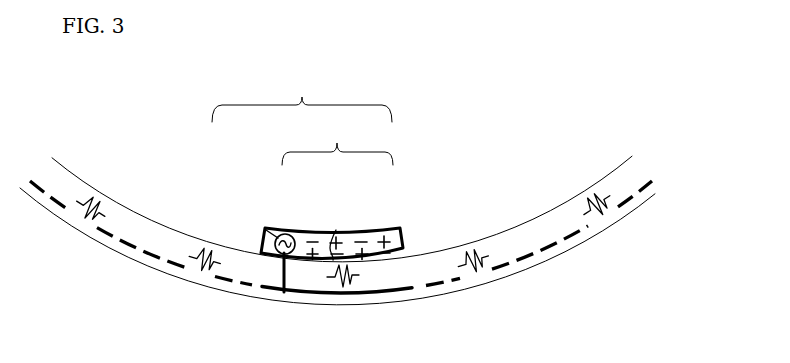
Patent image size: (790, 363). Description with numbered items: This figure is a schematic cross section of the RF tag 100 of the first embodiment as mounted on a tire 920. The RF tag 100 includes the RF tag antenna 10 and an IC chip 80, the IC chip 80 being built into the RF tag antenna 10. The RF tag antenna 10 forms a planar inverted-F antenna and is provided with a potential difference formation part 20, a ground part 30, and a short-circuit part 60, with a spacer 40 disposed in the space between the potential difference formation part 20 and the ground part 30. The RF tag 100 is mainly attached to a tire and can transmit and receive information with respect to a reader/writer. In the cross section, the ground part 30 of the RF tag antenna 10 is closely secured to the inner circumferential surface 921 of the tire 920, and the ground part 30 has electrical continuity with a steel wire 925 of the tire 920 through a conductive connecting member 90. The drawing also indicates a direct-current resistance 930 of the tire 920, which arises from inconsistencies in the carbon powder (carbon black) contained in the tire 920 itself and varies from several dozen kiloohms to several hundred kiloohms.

The RF tag 100 is at (315, 81).
The RF tag antenna 10 is at (337, 138).
The potential difference formation part 20 is at (296, 226).
The ground part 30 is at (336, 230).
The spacer 40 is at (361, 229).
The short-circuit part 60 is at (263, 233).
The IC chip 80 is at (266, 227).
The conductive connecting member 90 is at (283, 280).
The inner circumferential surface 921 is at (96, 189).
The tire 920 is at (134, 230).
The steel wire 925 is at (433, 291).
The direct-current resistance 930 is at (468, 255).